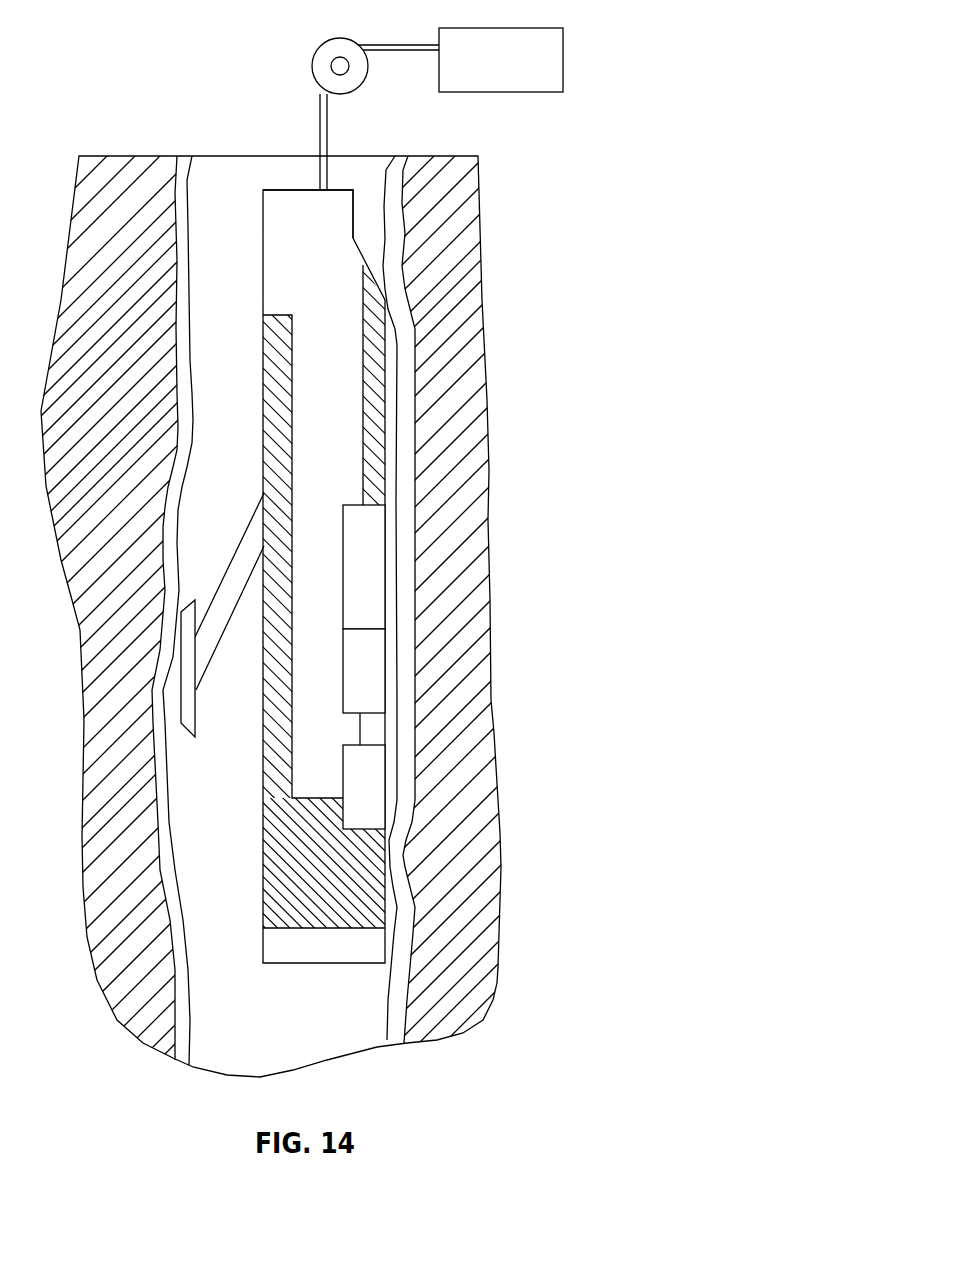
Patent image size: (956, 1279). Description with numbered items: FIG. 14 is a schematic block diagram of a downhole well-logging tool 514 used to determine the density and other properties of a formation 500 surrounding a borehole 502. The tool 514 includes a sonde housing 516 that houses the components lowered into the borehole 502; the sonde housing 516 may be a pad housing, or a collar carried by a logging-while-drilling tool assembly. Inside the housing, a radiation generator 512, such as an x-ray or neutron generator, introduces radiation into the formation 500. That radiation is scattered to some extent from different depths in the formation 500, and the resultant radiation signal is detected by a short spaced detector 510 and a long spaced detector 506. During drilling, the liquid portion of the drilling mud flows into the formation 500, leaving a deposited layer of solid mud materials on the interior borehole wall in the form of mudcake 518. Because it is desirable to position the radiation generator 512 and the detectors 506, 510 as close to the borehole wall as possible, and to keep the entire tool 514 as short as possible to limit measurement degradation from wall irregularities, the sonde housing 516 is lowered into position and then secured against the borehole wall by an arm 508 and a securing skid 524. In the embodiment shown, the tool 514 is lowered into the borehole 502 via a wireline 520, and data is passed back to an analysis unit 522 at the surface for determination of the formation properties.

The formation 500 is at (460, 227).
The borehole 502 is at (213, 184).
The long spaced detector 506 is at (352, 505).
The arm 508 is at (228, 563).
The short spaced detector 510 is at (388, 687).
The radiation generator 512 is at (388, 770).
The downhole well-logging tool 514 is at (273, 174).
The sonde housing 516 is at (343, 188).
The mudcake 518 is at (395, 165).
The wireline 520 is at (320, 102).
The analysis unit 522 is at (565, 60).
The securing skid 524 is at (188, 735).